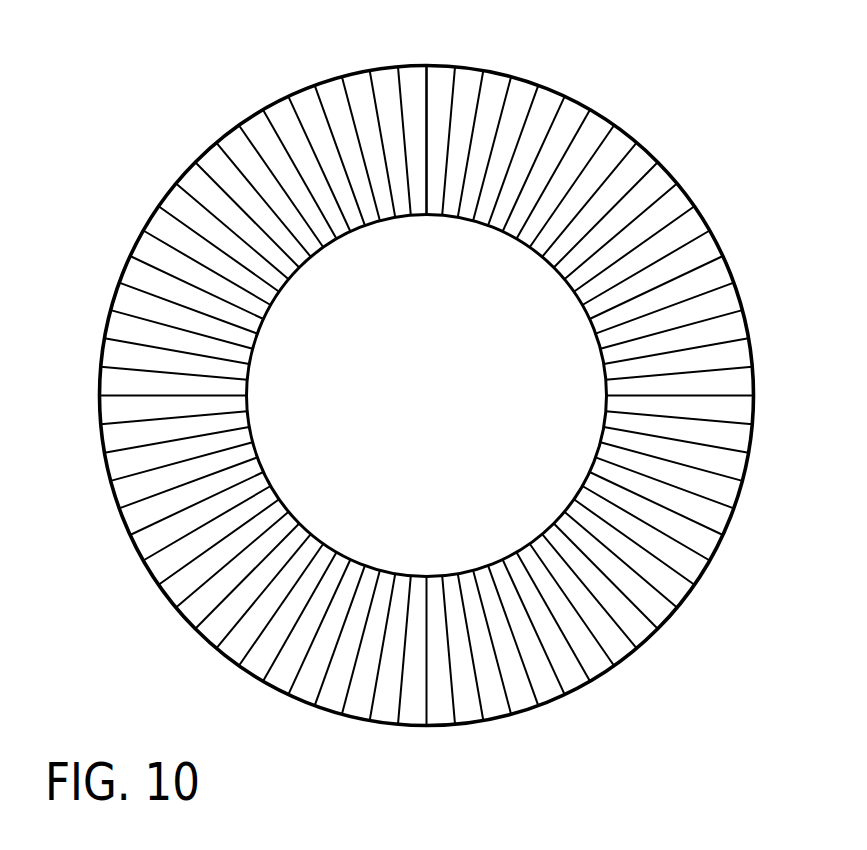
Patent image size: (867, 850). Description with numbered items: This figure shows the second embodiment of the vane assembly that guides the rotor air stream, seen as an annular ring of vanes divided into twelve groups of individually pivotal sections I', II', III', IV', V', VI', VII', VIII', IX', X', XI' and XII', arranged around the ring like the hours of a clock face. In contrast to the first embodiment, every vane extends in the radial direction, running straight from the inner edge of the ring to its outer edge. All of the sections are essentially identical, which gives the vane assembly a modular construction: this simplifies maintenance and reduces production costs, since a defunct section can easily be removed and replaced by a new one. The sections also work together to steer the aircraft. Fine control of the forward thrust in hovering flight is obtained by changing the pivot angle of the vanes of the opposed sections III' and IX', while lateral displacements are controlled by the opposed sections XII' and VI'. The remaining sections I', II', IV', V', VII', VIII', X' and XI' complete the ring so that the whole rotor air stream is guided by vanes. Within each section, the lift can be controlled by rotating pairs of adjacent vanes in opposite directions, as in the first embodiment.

The individually pivotal vane section XII' is at (436, 111).
The individually pivotal vane section I' is at (573, 150).
The individually pivotal vane section II' is at (671, 249).
The individually pivotal vane section III' is at (708, 391).
The individually pivotal vane section IV' is at (672, 542).
The individually pivotal vane section V' is at (577, 637).
The individually pivotal vane section VI' is at (421, 680).
The individually pivotal vane section VII' is at (268, 637).
The individually pivotal vane section VIII' is at (169, 545).
The individually pivotal vane section IX' is at (142, 389).
The individually pivotal vane section X' is at (183, 251).
The individually pivotal vane section XI' is at (276, 149).